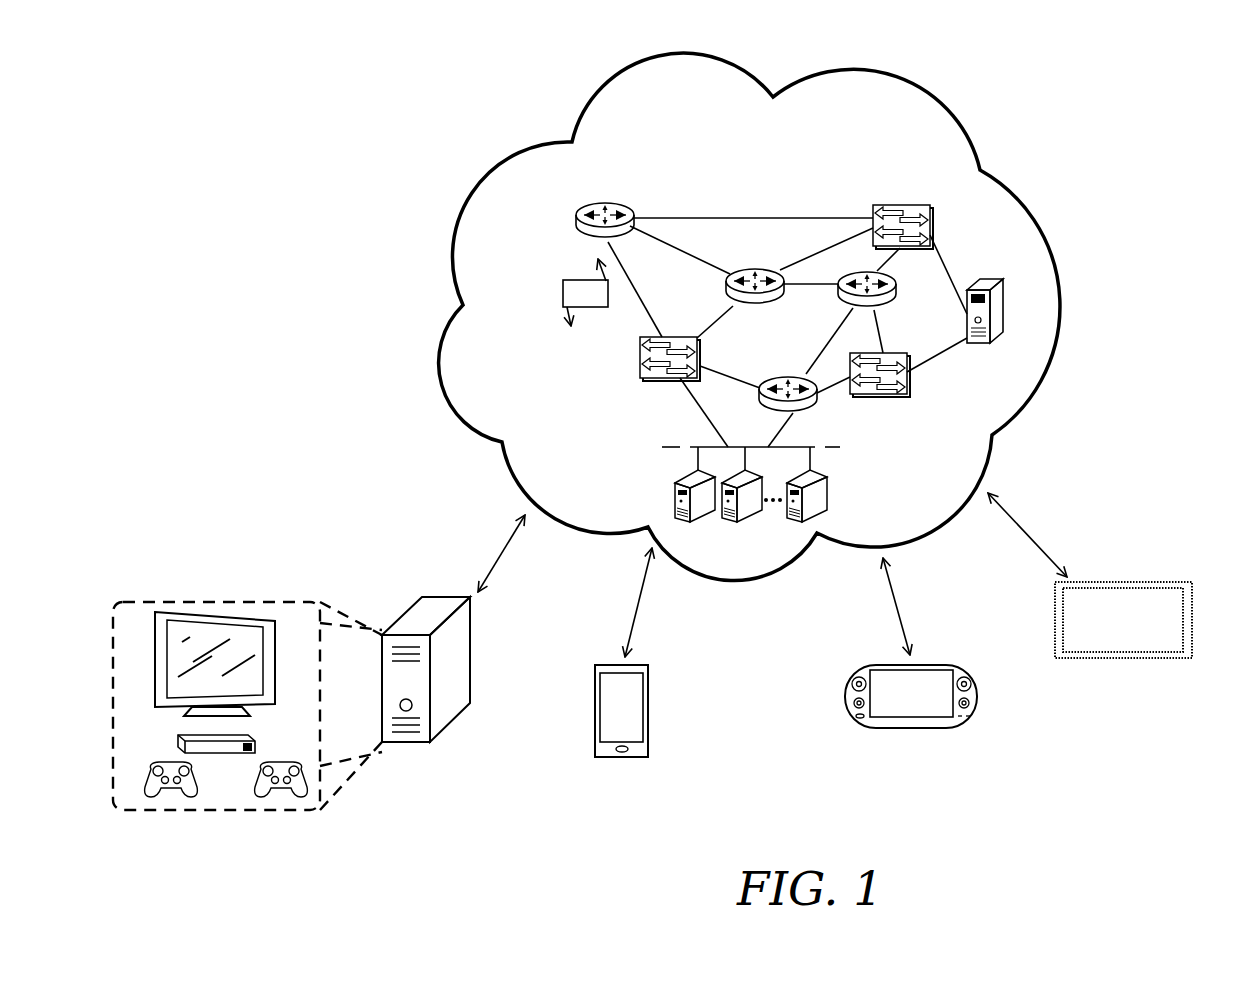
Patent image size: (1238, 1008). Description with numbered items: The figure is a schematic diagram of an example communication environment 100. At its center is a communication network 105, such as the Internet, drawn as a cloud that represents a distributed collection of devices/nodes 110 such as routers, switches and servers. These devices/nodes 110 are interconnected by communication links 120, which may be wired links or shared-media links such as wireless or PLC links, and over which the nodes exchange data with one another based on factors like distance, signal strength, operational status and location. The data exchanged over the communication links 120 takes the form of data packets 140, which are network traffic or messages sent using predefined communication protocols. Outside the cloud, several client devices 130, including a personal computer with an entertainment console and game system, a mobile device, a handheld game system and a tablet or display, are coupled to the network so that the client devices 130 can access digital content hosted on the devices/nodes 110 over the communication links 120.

The communication environment 100 is at (1095, 34).
The communication network 105 is at (850, 154).
The devices/nodes 110 is at (592, 206).
The communication links 120 is at (663, 276).
The client devices 130 is at (442, 712).
The data packets 140 is at (585, 292).